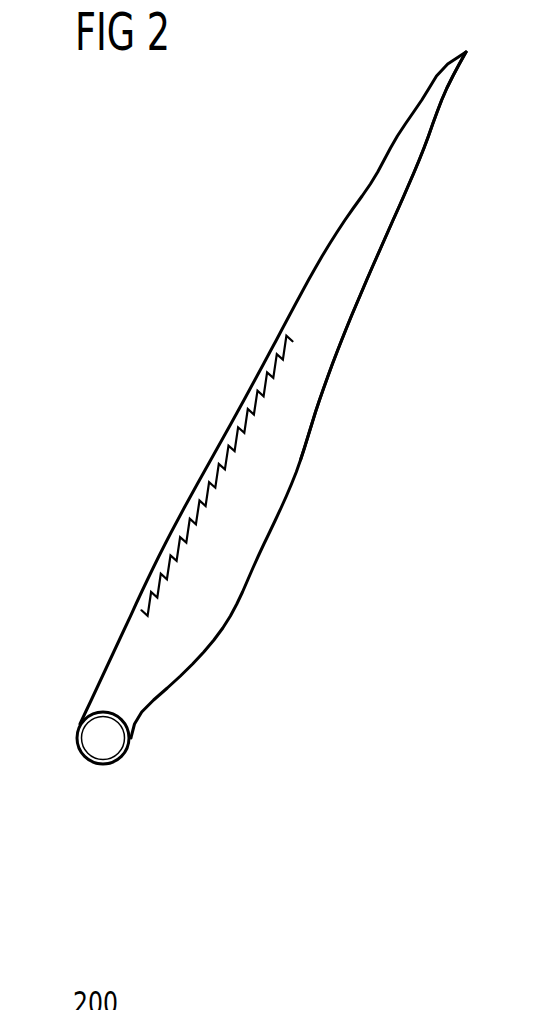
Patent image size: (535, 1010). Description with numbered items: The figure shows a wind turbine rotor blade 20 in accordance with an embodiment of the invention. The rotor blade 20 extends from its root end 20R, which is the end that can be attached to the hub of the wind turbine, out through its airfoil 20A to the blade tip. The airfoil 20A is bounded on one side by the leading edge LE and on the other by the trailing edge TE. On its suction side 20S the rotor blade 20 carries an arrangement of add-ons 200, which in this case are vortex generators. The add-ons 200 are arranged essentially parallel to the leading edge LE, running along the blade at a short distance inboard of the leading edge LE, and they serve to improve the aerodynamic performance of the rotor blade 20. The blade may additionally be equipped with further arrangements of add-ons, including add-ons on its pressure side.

The rotor blade 20 is at (266, 408).
The airfoil 20A is at (266, 395).
The suction side 20S is at (308, 382).
The root end 20R is at (137, 718).
The add-ons 200 is at (222, 437).
The leading edge LE is at (126, 622).
The trailing edge TE is at (243, 572).